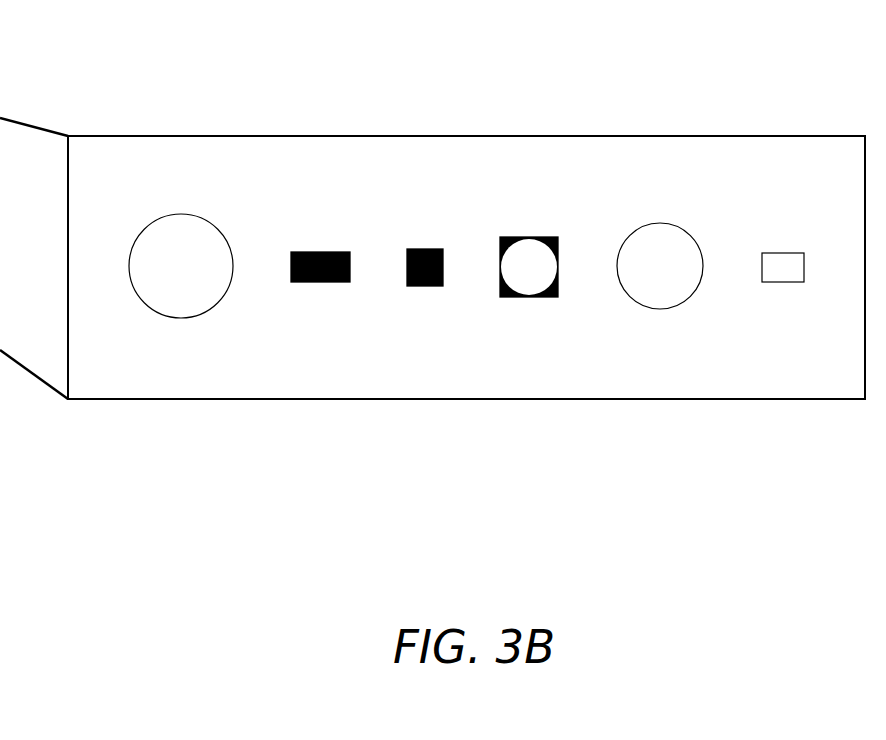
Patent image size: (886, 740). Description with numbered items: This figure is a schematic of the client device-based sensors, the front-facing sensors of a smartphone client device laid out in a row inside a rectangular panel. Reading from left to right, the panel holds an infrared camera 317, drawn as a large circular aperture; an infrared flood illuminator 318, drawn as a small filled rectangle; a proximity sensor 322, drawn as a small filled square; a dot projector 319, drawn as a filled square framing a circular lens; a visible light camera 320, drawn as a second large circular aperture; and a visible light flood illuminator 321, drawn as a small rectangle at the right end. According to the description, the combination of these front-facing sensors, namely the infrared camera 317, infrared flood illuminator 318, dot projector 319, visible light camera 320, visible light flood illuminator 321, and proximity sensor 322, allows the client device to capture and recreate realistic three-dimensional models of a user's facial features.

The infrared camera 317 is at (133, 210).
The infrared flood illuminator 318 is at (302, 230).
The dot projector 319 is at (490, 222).
The visible light camera 320 is at (660, 210).
The visible light flood illuminator 321 is at (800, 237).
The proximity sensor 322 is at (405, 307).